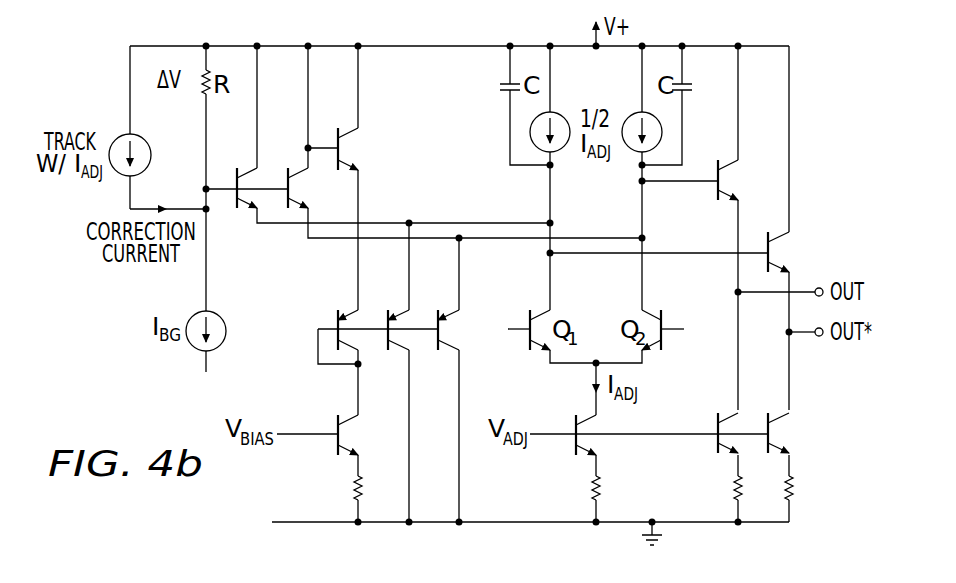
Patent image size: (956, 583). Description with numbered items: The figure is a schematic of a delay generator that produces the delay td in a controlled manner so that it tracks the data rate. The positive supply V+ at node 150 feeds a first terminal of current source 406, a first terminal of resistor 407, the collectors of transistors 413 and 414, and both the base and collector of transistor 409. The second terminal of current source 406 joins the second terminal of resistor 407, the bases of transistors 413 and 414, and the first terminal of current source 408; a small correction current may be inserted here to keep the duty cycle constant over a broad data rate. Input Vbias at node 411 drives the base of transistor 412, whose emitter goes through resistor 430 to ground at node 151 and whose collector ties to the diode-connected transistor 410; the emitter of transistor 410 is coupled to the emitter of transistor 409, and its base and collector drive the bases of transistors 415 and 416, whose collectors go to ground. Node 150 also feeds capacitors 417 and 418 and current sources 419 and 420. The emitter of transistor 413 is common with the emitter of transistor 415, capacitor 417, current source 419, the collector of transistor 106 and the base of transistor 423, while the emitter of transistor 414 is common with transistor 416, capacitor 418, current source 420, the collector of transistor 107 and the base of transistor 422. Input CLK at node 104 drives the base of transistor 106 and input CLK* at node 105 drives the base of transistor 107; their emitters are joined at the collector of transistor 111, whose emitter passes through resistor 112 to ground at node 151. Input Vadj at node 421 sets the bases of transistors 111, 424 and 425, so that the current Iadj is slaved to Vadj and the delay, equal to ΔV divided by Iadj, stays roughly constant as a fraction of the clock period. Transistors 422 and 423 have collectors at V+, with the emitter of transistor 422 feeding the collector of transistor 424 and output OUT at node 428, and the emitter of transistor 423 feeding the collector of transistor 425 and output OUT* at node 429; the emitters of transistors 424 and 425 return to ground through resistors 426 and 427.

The node 104 is at (523, 339).
The node 105 is at (668, 339).
The transistor 106 is at (538, 308).
The transistor 107 is at (655, 308).
The transistor 111 is at (575, 420).
The resistor 112 is at (603, 479).
The node 150 is at (700, 45).
The node 151 is at (500, 521).
The current source 406 is at (120, 137).
The resistor 407 is at (200, 90).
The current source 408 is at (228, 330).
The transistor 409 is at (345, 128).
The transistor 410 is at (335, 318).
The node 411 is at (313, 432).
The transistor 412 is at (332, 453).
The transistor 413 is at (243, 168).
The transistor 414 is at (294, 168).
The transistor 415 is at (398, 351).
The transistor 416 is at (448, 351).
The capacitor 417 is at (500, 86).
The capacitor 418 is at (690, 90).
The current source 419 is at (562, 150).
The current source 420 is at (630, 112).
The node 421 is at (556, 438).
The transistor 422 is at (716, 197).
The transistor 423 is at (778, 232).
The transistor 424 is at (715, 420).
The transistor 425 is at (766, 416).
The resistor 426 is at (731, 483).
The resistor 427 is at (800, 482).
The node 428 is at (805, 289).
The node 429 is at (805, 336).
The resistor 430 is at (352, 487).